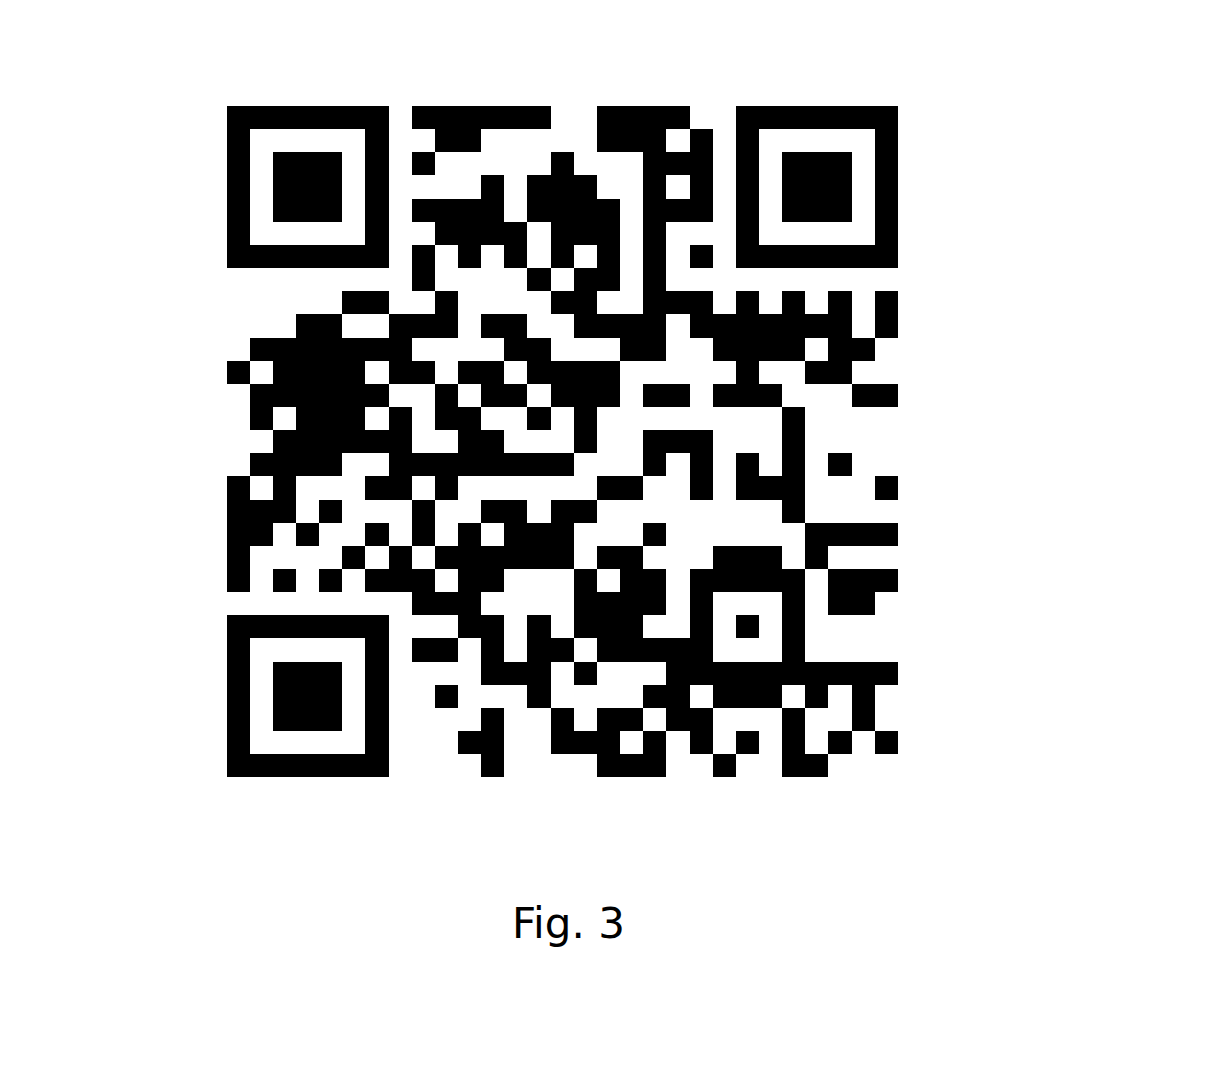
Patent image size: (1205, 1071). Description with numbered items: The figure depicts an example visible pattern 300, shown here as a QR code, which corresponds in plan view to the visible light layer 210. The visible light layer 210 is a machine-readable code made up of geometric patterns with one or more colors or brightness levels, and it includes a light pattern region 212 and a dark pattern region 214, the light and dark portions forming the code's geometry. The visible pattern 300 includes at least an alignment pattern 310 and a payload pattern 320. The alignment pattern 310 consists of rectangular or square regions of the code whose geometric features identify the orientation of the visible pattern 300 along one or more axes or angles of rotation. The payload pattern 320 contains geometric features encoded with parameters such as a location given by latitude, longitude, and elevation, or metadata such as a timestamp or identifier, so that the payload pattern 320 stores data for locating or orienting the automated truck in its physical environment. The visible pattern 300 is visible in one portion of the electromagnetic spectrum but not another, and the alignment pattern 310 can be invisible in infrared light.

The visible pattern 300 is at (1198, 49).
The visible light layer 210 is at (225, 95).
The alignment pattern 310 is at (293, 103).
The payload pattern 320 is at (725, 593).
The light pattern region 212 is at (225, 533).
The dark pattern region 214 is at (880, 452).